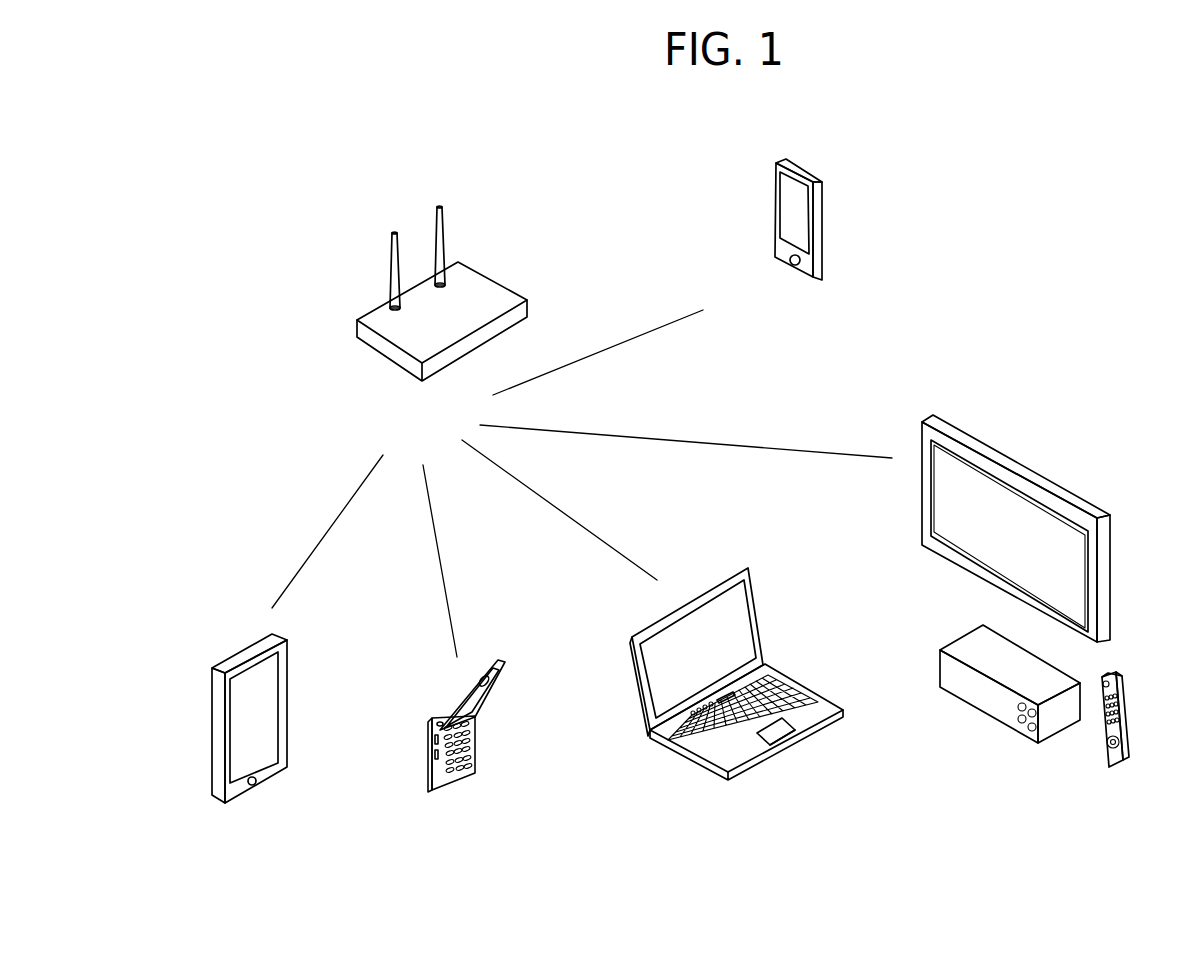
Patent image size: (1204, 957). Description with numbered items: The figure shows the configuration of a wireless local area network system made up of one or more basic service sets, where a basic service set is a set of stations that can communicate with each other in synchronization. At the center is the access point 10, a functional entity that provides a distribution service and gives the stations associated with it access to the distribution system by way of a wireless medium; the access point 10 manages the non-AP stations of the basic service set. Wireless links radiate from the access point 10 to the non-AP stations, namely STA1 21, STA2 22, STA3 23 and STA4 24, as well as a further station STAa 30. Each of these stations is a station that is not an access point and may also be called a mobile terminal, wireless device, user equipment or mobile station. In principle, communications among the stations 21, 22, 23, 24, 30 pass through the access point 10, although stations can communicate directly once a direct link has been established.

The access point (AP) 10 is at (442, 329).
The non-AP STA1 21 is at (245, 754).
The non-AP STA2 22 is at (462, 767).
The non-AP STA3 23 is at (736, 711).
The non-AP STA4 24 is at (1025, 615).
The non-AP STA (STAa) 30 is at (792, 254).